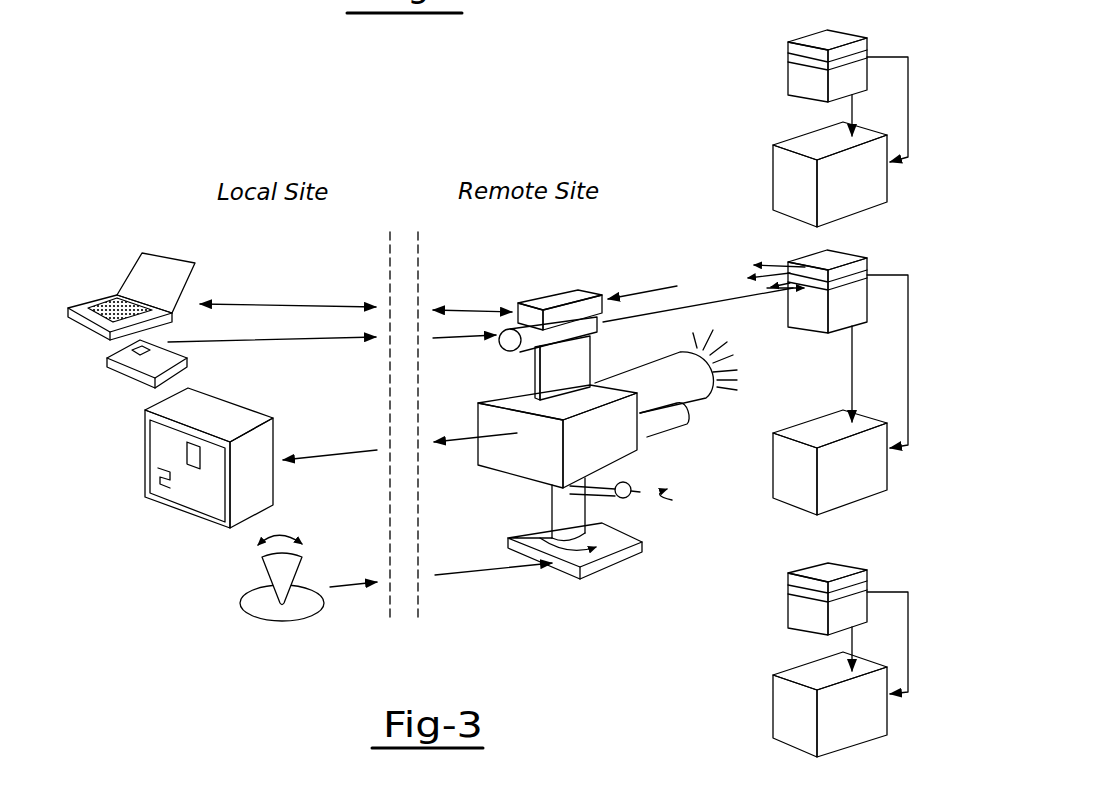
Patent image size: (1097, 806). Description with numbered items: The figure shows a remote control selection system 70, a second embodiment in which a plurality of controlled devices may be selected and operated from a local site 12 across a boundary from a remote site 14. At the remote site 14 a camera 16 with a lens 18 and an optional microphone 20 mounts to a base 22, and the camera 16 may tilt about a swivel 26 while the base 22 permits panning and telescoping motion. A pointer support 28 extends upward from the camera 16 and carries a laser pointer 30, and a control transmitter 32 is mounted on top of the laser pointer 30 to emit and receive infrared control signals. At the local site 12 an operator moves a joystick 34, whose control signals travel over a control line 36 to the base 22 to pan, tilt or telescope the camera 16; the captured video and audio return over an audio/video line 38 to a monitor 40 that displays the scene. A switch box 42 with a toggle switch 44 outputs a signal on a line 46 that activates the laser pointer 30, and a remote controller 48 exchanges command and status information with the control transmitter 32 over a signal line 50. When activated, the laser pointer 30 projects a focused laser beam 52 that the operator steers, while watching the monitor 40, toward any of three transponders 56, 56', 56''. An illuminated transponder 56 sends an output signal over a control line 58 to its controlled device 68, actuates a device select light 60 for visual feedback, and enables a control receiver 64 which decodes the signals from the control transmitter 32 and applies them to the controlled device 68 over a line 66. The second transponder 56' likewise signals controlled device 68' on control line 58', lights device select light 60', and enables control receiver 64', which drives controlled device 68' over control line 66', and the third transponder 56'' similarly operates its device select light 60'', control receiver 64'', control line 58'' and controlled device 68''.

The remote control selection system 70 is at (180, 208).
The local site 12 is at (324, 276).
The remote site 14 is at (674, 238).
The remote controller 48 is at (95, 302).
The toggle switch 44 is at (137, 353).
The switch box 42 is at (123, 382).
The monitor 40 is at (178, 487).
The joystick 34 is at (298, 612).
The signal line 50 is at (280, 303).
The line 46 is at (318, 342).
The audio/video line 38 is at (326, 450).
The control line 36 is at (350, 587).
The control transmitter 32 is at (560, 297).
The laser pointer 30 is at (528, 342).
The pointer support 28 is at (573, 357).
The lens 18 is at (663, 375).
The microphone 20 is at (660, 430).
The camera 16 is at (627, 448).
The swivel 26 is at (607, 500).
The base 22 is at (617, 564).
The laser beam 52 is at (720, 297).
The transponder 56 is at (784, 66).
The device select light 60 is at (811, 21).
The control receiver 64 is at (743, 81).
The line 66 is at (787, 115).
The control line 58 is at (885, 81).
The controlled device 68 is at (798, 174).
The transponder 56' is at (845, 300).
The device select light 60' is at (774, 256).
The control receiver 64' is at (795, 343).
The control line 66' is at (813, 374).
The control line 58' is at (884, 336).
The controlled device 68' is at (840, 471).
The transponder 56'' is at (792, 599).
The device select light 60'' is at (786, 554).
The control receiver 64'' is at (757, 639).
The control line 58'' is at (878, 611).
The controlled device 68'' is at (835, 722).